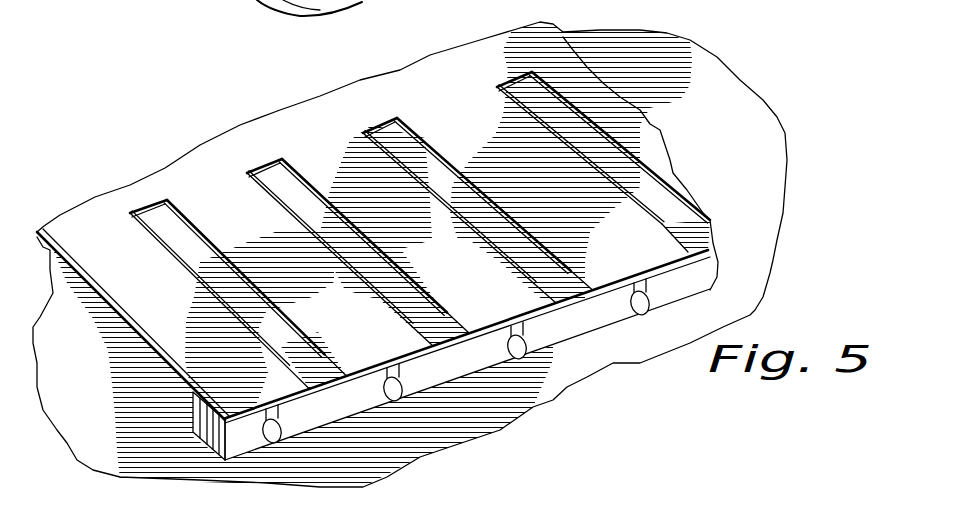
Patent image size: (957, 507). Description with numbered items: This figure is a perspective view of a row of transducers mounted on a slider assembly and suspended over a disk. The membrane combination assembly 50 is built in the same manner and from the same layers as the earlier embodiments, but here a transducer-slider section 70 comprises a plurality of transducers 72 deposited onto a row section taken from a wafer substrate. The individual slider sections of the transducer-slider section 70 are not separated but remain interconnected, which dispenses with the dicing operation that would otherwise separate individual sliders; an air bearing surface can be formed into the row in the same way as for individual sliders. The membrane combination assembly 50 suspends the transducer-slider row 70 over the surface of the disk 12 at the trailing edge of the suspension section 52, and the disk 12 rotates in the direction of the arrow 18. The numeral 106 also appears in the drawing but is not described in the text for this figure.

The disk 12 is at (491, 409).
The arrow 18 is at (640, 53).
The membrane combination assembly 50 is at (377, 247).
The suspension section 52 is at (122, 342).
The transducer-slider section 70 is at (200, 436).
The transducers 72 is at (278, 440).
The lead wire 106 is at (790, 506).